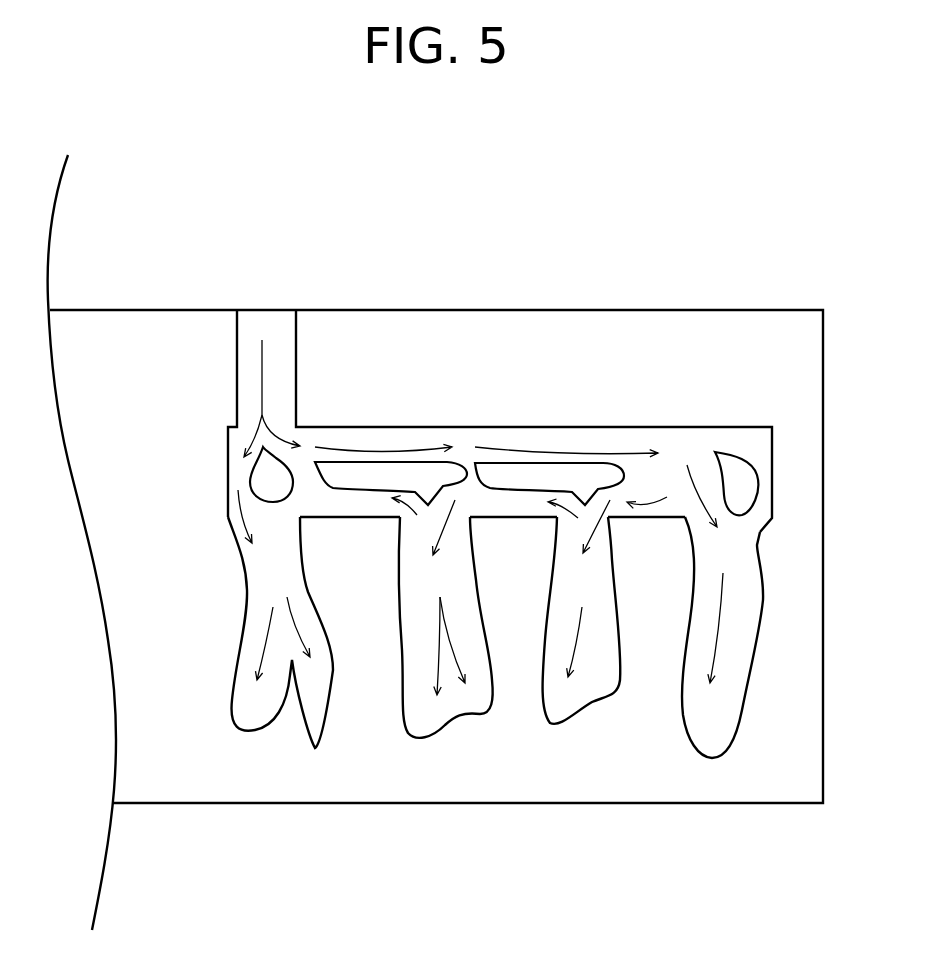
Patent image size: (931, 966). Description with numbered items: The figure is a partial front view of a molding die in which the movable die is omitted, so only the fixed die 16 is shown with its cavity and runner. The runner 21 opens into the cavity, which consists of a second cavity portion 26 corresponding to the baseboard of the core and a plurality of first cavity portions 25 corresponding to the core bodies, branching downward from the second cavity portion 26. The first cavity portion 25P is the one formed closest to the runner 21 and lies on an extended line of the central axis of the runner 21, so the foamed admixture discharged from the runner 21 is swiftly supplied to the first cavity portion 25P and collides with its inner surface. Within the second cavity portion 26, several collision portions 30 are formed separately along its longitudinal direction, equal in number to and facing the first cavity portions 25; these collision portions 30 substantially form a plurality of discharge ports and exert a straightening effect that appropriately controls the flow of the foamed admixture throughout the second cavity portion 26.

The fixed die 16 is at (628, 335).
The runner 21 is at (300, 331).
The second cavity portion 26 is at (667, 463).
The collision portion 30 is at (270, 482).
The first cavity portion 25 is at (432, 722).
The first cavity portion closest to the runner 25P is at (272, 702).